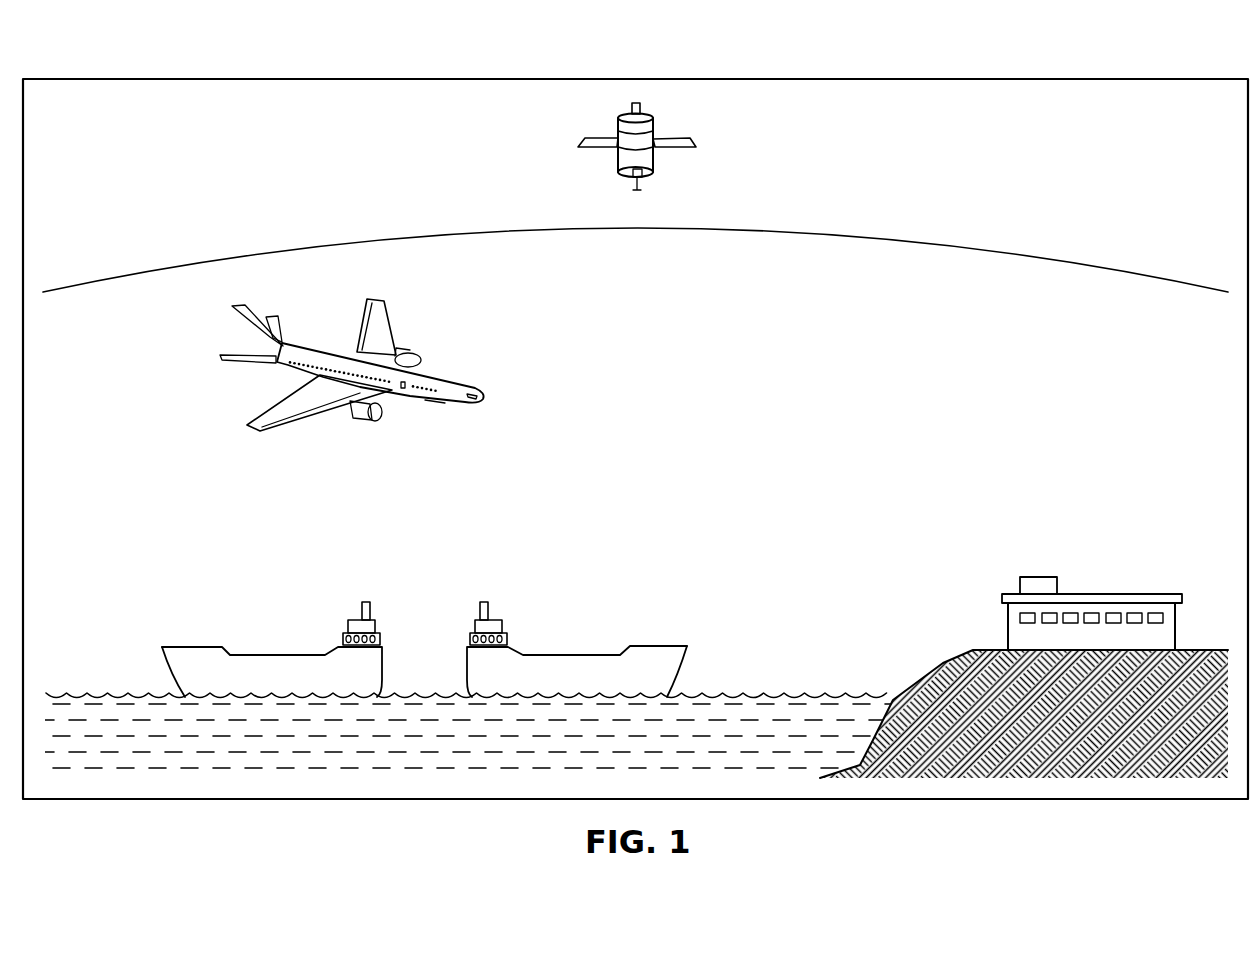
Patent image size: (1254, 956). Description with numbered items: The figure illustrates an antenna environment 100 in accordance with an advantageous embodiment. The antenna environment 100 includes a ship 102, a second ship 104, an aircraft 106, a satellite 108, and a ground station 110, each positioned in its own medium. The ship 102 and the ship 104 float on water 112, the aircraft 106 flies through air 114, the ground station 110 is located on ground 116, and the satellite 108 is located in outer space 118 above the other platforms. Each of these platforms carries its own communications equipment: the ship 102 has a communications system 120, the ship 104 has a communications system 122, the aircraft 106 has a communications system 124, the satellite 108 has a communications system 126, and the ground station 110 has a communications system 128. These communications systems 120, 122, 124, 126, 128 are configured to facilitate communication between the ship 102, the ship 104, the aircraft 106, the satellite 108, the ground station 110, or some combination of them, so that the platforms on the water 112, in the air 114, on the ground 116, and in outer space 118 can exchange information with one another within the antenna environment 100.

The antenna environment 100 is at (1108, 170).
The ship 102 is at (272, 624).
The ship 104 is at (571, 624).
The aircraft 106 is at (361, 377).
The satellite 108 is at (628, 155).
The ground station 110 is at (1092, 587).
The water 112 is at (775, 710).
The air 114 is at (783, 422).
The ground 116 is at (935, 677).
The outer space 118 is at (363, 163).
The communications system 120 is at (367, 602).
The communications system 122 is at (487, 602).
The communications system 124 is at (437, 405).
The communications system 126 is at (641, 187).
The communications system 128 is at (1038, 577).